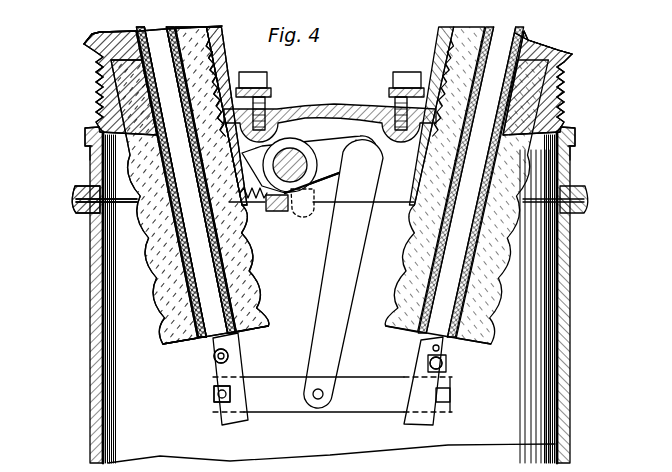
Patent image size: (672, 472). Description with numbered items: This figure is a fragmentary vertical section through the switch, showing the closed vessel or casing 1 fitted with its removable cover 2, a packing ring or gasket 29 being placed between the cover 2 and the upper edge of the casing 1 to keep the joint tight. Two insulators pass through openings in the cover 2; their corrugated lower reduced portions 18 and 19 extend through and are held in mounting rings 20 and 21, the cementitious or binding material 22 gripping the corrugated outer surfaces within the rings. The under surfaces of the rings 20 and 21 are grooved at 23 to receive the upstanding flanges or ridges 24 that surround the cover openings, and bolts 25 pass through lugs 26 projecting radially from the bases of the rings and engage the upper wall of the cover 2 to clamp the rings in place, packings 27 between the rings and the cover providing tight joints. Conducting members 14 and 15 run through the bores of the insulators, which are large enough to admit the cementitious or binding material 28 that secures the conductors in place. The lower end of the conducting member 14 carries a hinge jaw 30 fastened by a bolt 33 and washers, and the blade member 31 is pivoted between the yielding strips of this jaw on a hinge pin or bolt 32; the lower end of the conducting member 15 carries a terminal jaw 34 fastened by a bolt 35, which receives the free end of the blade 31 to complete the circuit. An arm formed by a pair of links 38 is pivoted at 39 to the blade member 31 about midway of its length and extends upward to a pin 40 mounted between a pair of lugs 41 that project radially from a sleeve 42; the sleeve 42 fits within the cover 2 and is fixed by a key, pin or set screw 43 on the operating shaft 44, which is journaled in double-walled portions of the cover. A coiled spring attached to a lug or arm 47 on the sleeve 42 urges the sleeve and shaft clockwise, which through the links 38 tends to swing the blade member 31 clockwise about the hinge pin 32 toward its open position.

The casing 1 is at (90, 272).
The cover 2 is at (75, 186).
The conducting member 14 is at (153, 37).
The conducting member 15 is at (497, 48).
The lower reduced portion of insulator 18 is at (120, 68).
The lower reduced portion of insulator 19 is at (537, 70).
The mounting ring 20 is at (102, 85).
The mounting ring 21 is at (563, 96).
The cementitious or binding material 22 is at (100, 104).
The groove 23 is at (90, 130).
The upstanding flange or ridge 24 is at (326, 86).
The bolt 25 is at (258, 72).
The lug 26 is at (272, 92).
The packing 27 is at (92, 148).
The cementitious or binding material 28 is at (160, 31).
The packing ring or gasket 29 is at (583, 207).
The hinge jaw 30 is at (221, 424).
The blade member 31 is at (295, 402).
The hinge pin or bolt 32 is at (214, 393).
The bolt 33 is at (214, 354).
The terminal jaw 34 is at (436, 420).
The bolt 35 is at (446, 370).
The links 38 is at (340, 335).
The pivot 39 is at (322, 398).
The pin 40 is at (373, 153).
The lugs 41 is at (335, 168).
The sleeve 42 is at (333, 130).
The key, pin or set screw 43 is at (272, 198).
The shaft 44 is at (284, 212).
The lug or arm 47 is at (303, 210).